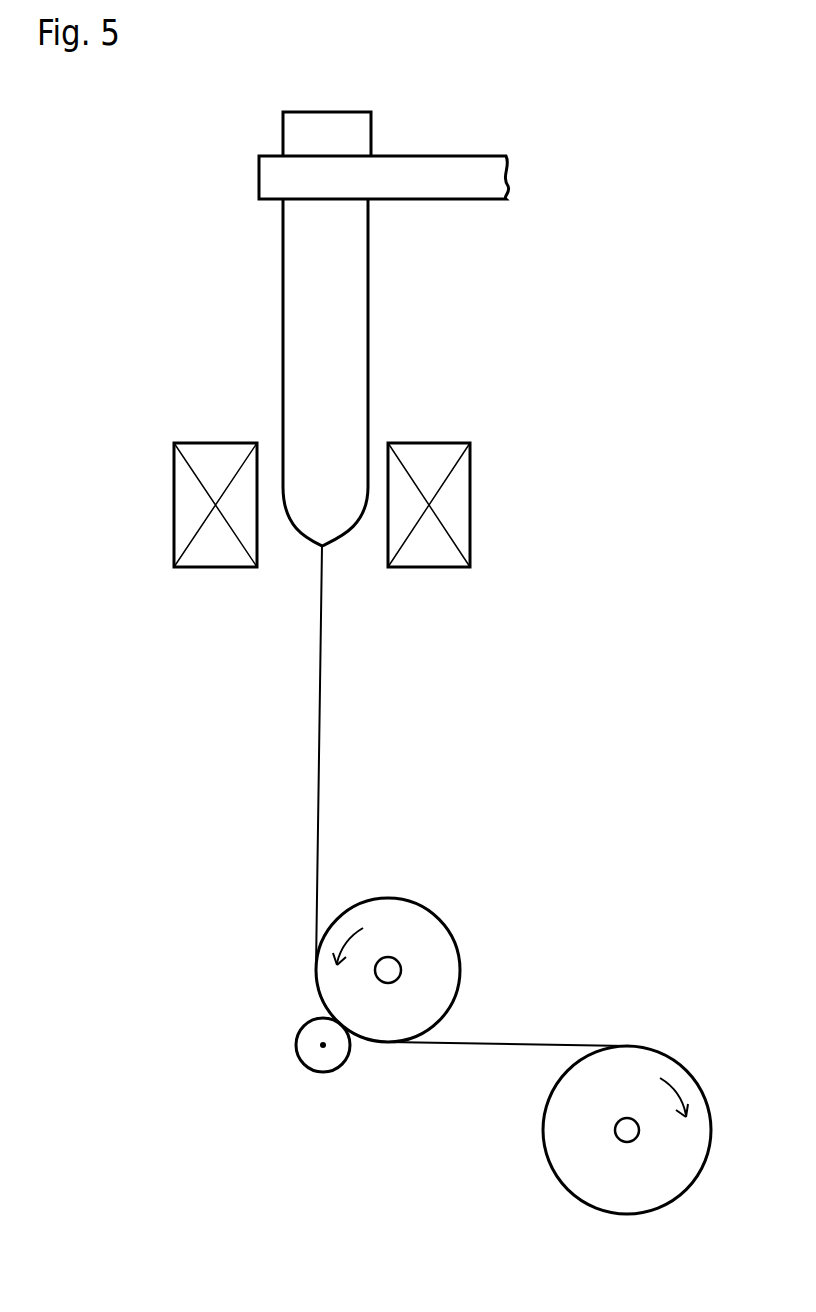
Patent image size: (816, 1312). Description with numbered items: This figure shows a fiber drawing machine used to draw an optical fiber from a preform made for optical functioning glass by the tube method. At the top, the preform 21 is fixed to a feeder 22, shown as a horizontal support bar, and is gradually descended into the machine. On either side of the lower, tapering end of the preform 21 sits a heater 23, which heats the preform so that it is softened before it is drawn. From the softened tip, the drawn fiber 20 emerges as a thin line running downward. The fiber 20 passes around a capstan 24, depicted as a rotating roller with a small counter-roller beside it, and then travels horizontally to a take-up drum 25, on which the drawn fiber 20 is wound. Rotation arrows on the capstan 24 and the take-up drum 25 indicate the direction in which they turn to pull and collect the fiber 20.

The optical fiber 20 is at (320, 717).
The preform 21 is at (355, 330).
The feeder 22 is at (466, 165).
The heater 23 is at (180, 490).
The capstan 24 is at (425, 925).
The take-up drum 25 is at (630, 1060).